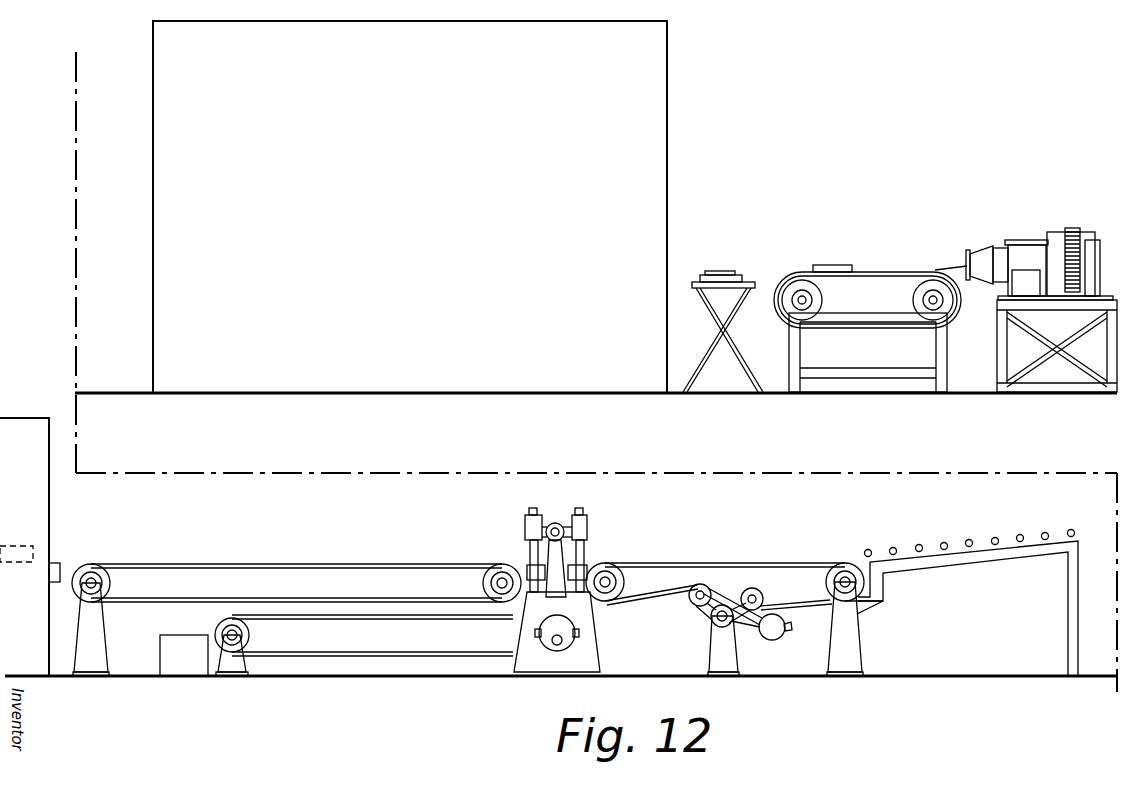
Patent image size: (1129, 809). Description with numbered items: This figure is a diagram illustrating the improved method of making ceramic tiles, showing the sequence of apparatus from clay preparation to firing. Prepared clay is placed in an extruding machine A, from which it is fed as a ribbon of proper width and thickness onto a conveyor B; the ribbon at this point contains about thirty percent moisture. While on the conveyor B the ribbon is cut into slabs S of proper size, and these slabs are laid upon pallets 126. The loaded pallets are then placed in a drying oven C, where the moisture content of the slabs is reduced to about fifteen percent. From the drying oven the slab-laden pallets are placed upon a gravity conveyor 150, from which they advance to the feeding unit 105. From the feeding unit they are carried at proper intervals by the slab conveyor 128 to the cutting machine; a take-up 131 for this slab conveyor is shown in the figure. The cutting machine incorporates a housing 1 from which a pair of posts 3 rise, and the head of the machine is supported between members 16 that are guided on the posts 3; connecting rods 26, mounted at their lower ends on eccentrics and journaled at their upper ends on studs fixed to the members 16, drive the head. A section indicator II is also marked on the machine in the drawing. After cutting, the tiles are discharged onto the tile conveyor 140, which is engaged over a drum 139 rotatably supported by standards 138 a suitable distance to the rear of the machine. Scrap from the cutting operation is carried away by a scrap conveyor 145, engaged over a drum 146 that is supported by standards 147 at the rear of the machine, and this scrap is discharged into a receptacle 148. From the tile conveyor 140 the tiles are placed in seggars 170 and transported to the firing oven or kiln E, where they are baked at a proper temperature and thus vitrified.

The housing 1 is at (586, 651).
The posts 3 is at (525, 550).
The members 16 is at (558, 521).
The section indicator II is at (589, 526).
The connecting rods 26 is at (558, 607).
The feeding unit 105 is at (848, 636).
The pallet 126 is at (748, 282).
The slab conveyor 128 is at (728, 557).
The take-up 131 is at (710, 617).
The standards 138 is at (97, 615).
The drum 139 is at (98, 566).
The tile conveyor 140 is at (386, 564).
The scrap conveyor 145 is at (350, 620).
The drum 146 is at (222, 625).
The standards 147 is at (240, 663).
The receptacle 148 is at (184, 655).
The gravity conveyor 150 is at (959, 545).
The seggars 170 is at (33, 555).
The extruding machine A is at (1026, 244).
The conveyor B is at (800, 270).
The drying oven C is at (410, 207).
The firing oven or kiln E is at (15, 432).
The slabs S is at (720, 271).